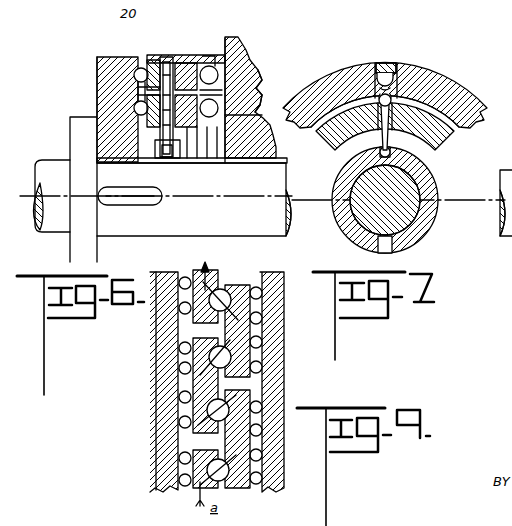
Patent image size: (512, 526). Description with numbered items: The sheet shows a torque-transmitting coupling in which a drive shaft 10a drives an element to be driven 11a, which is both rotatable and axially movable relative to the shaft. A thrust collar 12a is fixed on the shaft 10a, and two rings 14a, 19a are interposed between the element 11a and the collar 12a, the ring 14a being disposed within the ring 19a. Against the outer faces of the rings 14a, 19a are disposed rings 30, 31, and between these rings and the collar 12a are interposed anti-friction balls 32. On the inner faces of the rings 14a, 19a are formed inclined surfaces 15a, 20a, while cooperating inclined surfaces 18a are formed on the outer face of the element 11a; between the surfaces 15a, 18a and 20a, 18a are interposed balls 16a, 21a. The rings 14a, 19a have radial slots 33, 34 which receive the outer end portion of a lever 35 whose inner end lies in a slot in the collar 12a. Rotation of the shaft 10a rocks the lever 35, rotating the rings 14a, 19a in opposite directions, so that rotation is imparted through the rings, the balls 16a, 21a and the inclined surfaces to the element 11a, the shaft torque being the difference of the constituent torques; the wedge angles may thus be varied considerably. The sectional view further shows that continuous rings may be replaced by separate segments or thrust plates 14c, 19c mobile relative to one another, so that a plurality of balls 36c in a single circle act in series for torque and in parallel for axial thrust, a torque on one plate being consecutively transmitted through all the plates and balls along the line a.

In FIG. 6, the drive shaft 10a is at (272, 188).
In FIG. 6, the element to be driven 11a is at (262, 149).
In FIG. 6, the thrust collar 12a is at (97, 82).
In FIG. 6, the ring 14a is at (180, 160).
In FIG. 7, the ring 14a is at (452, 137).
In FIG. 6, the inclined surfaces 15a is at (252, 110).
In FIG. 6, the balls 16a is at (250, 92).
In FIG. 6, the cooperating inclined surfaces 18a is at (258, 76).
In FIG. 6, the ring 19a is at (200, 58).
In FIG. 7, the ring 19a is at (452, 82).
In FIG. 6, the inclined surfaces 20a is at (214, 66).
In FIG. 6, the balls 21a is at (250, 58).
In FIG. 6, the ring 30 is at (132, 162).
In FIG. 6, the ring 31 is at (153, 60).
In FIG. 6, the anti-friction balls 32 is at (141, 60).
In FIG. 7, the radial slot 33 is at (427, 145).
In FIG. 7, the radial slot 34 is at (394, 86).
In FIG. 7, the lever 35 is at (385, 66).
In FIG. 9, the segments or thrust plates 14c is at (246, 440).
In FIG. 9, the segments or thrust plates 19c is at (178, 383).
In FIG. 9, the balls 36c is at (262, 383).